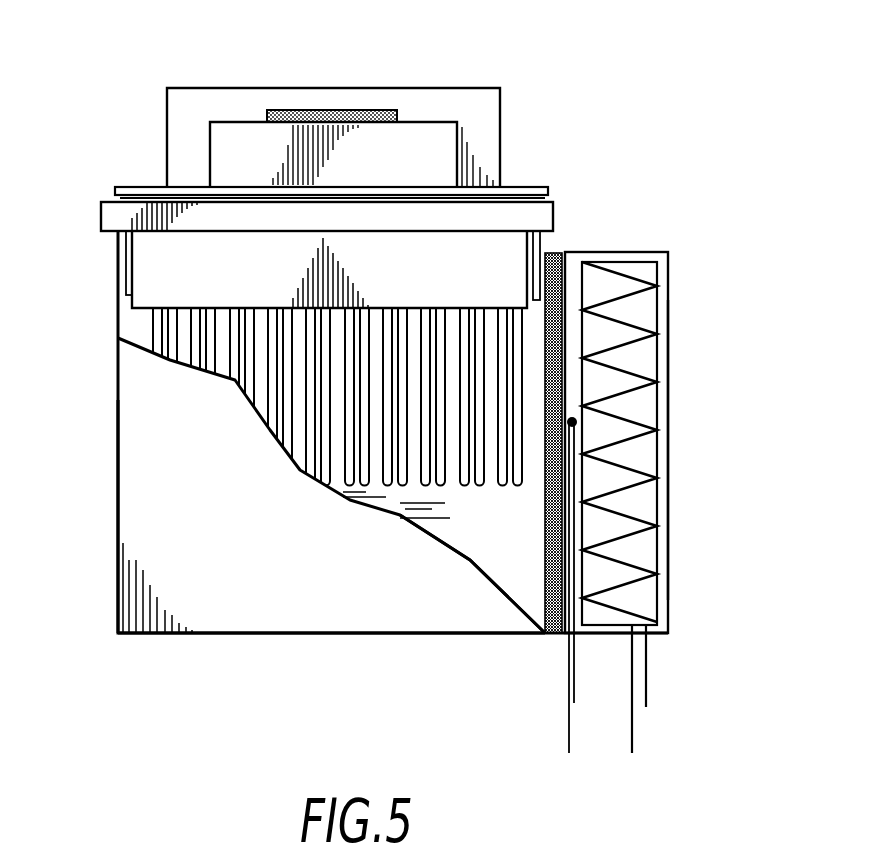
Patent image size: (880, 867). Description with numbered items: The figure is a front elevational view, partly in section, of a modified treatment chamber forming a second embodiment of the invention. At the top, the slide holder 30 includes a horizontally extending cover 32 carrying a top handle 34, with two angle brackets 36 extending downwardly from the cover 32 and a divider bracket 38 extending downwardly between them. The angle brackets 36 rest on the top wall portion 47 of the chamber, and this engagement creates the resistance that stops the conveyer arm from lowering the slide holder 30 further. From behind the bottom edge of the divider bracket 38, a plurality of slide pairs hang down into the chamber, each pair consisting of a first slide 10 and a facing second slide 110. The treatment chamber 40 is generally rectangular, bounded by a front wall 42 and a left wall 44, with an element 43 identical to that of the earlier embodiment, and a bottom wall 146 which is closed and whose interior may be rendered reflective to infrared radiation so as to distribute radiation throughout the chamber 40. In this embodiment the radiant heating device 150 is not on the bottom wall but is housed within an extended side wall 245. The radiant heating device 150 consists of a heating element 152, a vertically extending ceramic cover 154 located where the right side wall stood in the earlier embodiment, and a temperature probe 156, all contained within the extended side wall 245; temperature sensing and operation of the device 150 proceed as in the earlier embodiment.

The top handle 34 is at (197, 100).
The slide holder 30 is at (161, 178).
The cover 32 is at (132, 187).
The top wall portion 47 is at (110, 215).
The angle brackets 36 is at (128, 272).
The divider bracket 38 is at (152, 284).
The first slide 10 is at (157, 331).
The second slide 110 is at (163, 362).
The treatment chamber 40 is at (112, 452).
The left wall 44 is at (116, 510).
The bottom wall 146 is at (155, 634).
The front wall 42 is at (255, 612).
The treatment chamber element 43 is at (520, 562).
The ceramic cover 154 is at (555, 636).
The radiant heating device 150 is at (674, 278).
The extended side wall 245 is at (668, 445).
The heating element 152 is at (647, 568).
The temperature probe 156 is at (578, 663).